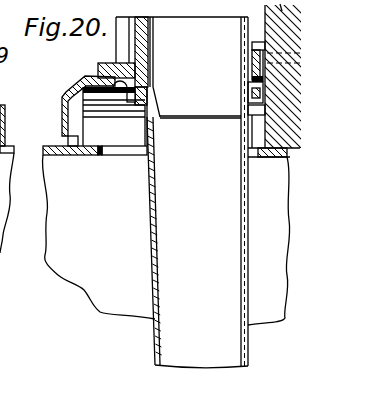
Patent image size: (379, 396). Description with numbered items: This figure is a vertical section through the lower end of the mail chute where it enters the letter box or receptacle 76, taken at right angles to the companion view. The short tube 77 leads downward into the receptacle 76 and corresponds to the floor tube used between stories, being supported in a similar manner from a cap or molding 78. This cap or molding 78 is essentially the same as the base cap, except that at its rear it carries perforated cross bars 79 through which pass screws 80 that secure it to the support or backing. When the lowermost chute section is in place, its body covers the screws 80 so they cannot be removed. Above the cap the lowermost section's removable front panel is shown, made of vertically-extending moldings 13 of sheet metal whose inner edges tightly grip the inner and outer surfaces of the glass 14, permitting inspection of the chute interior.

The vertically-extending molding 13 is at (120, 42).
The glass 14 is at (145, 43).
The letter box or receptacle 76 is at (98, 232).
The short tube 77 is at (157, 218).
The cap or molding 78 is at (74, 92).
The perforated cross bar 79 is at (250, 72).
The screw 80 is at (182, 67).